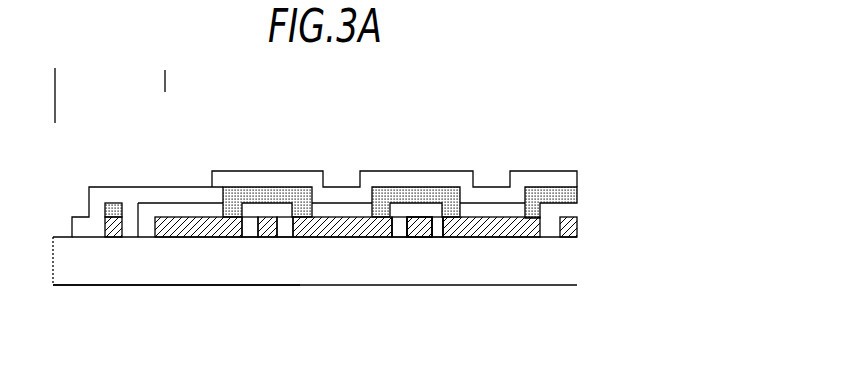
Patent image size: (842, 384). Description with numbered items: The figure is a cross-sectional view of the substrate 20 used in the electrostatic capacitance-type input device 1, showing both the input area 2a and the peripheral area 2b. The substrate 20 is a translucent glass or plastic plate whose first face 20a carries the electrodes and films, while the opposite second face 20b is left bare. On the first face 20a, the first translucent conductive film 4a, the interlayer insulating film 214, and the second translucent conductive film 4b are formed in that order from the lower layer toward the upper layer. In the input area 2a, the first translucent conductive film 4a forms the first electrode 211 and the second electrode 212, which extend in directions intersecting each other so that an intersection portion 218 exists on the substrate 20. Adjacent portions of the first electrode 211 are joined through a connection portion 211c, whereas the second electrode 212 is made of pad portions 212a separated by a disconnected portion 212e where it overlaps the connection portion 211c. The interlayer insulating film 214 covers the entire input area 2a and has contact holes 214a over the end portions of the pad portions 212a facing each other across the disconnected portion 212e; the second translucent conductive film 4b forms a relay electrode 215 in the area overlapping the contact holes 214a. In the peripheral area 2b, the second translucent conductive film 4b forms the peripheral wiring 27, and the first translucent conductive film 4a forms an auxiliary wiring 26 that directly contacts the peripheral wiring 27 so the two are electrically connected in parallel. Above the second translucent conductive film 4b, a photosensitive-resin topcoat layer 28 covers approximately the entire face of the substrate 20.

The electrostatic capacitance-type input device 1 is at (526, 130).
The input area 2a is at (577, 81).
The peripheral area 2b is at (164, 81).
The first translucent conductive film 4a is at (336, 297).
The second translucent conductive film 4b is at (291, 165).
The substrate 20 is at (587, 238).
The first face 20a is at (228, 237).
The second face 20b is at (180, 285).
The auxiliary wiring 26 is at (75, 269).
The peripheral wiring 27 is at (112, 187).
The topcoat layer 28 is at (551, 178).
The first electrode 211 is at (397, 287).
The connection portion 211c is at (393, 240).
The second electrode 212 is at (423, 281).
The pad portion 212a is at (332, 237).
The disconnected portion 212e is at (419, 227).
The interlayer insulating film 214 is at (177, 203).
The contact hole 214a is at (400, 234).
The relay electrode 215 is at (268, 195).
The intersection portion 218 is at (423, 250).